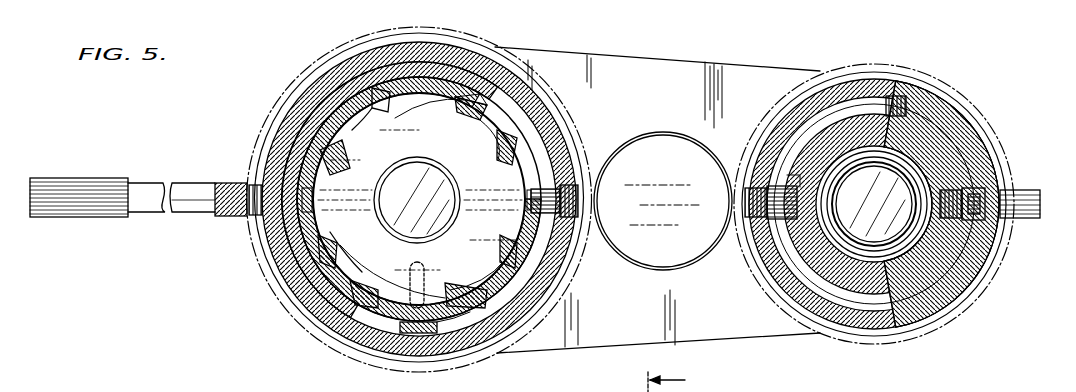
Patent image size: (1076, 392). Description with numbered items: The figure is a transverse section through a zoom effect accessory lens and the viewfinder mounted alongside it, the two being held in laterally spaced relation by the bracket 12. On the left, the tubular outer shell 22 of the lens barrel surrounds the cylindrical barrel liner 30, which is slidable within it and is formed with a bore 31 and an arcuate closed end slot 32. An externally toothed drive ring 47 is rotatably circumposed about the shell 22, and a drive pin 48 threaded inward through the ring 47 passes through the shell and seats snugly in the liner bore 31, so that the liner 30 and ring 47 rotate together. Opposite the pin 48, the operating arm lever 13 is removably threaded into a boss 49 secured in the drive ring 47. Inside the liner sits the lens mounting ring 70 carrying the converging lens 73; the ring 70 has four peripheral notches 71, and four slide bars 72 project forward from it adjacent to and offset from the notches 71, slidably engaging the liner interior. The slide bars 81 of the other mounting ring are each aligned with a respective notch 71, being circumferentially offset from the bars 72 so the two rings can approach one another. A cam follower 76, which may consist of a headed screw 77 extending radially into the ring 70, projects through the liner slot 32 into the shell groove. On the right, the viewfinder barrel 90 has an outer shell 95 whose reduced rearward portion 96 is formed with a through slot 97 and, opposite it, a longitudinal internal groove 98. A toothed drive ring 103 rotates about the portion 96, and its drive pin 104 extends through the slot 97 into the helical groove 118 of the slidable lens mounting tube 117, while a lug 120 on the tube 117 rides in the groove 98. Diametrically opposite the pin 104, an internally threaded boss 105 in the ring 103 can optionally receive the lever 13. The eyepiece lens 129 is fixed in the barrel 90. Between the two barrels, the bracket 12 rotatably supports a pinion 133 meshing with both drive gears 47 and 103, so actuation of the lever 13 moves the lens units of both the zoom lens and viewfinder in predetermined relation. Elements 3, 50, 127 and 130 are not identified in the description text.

The section line 3 is at (675, 382).
The bracket 12 is at (686, 78).
The operating arm lever 13 is at (128, 182).
The outer shell 22 is at (355, 60).
The barrel liner 30 is at (480, 340).
The bore 31 is at (531, 200).
The arcuate closed end slot 32 is at (312, 218).
The drive ring 47 is at (326, 62).
The drive pin 48 is at (552, 192).
The boss 49 is at (233, 183).
The clutch shoe 50 is at (378, 70).
The lens mounting ring 70 is at (413, 116).
The peripheral notches 71 is at (350, 130).
The slide bars 72 is at (348, 172).
The lens 73 is at (425, 180).
The cam follower 76 is at (402, 334).
The headed screw 77 is at (424, 272).
The slide bars 81 is at (378, 116).
The viewfinder barrel 90 is at (948, 100).
The outer shell 95 is at (962, 120).
The reduced rearward portion 96 is at (898, 96).
The through slot 97 is at (790, 260).
The groove 98 is at (990, 198).
The drive ring 103 is at (857, 85).
The drive pin 104 is at (766, 222).
The boss 105 is at (1036, 196).
The lens mounting tube 117 is at (840, 285).
The helical groove 118 is at (790, 176).
The lug 120 is at (980, 190).
The bearing ring 127 is at (905, 165).
The eyepiece lens 129 is at (880, 217).
The bearing 130 is at (912, 182).
The pinion 133 is at (651, 272).